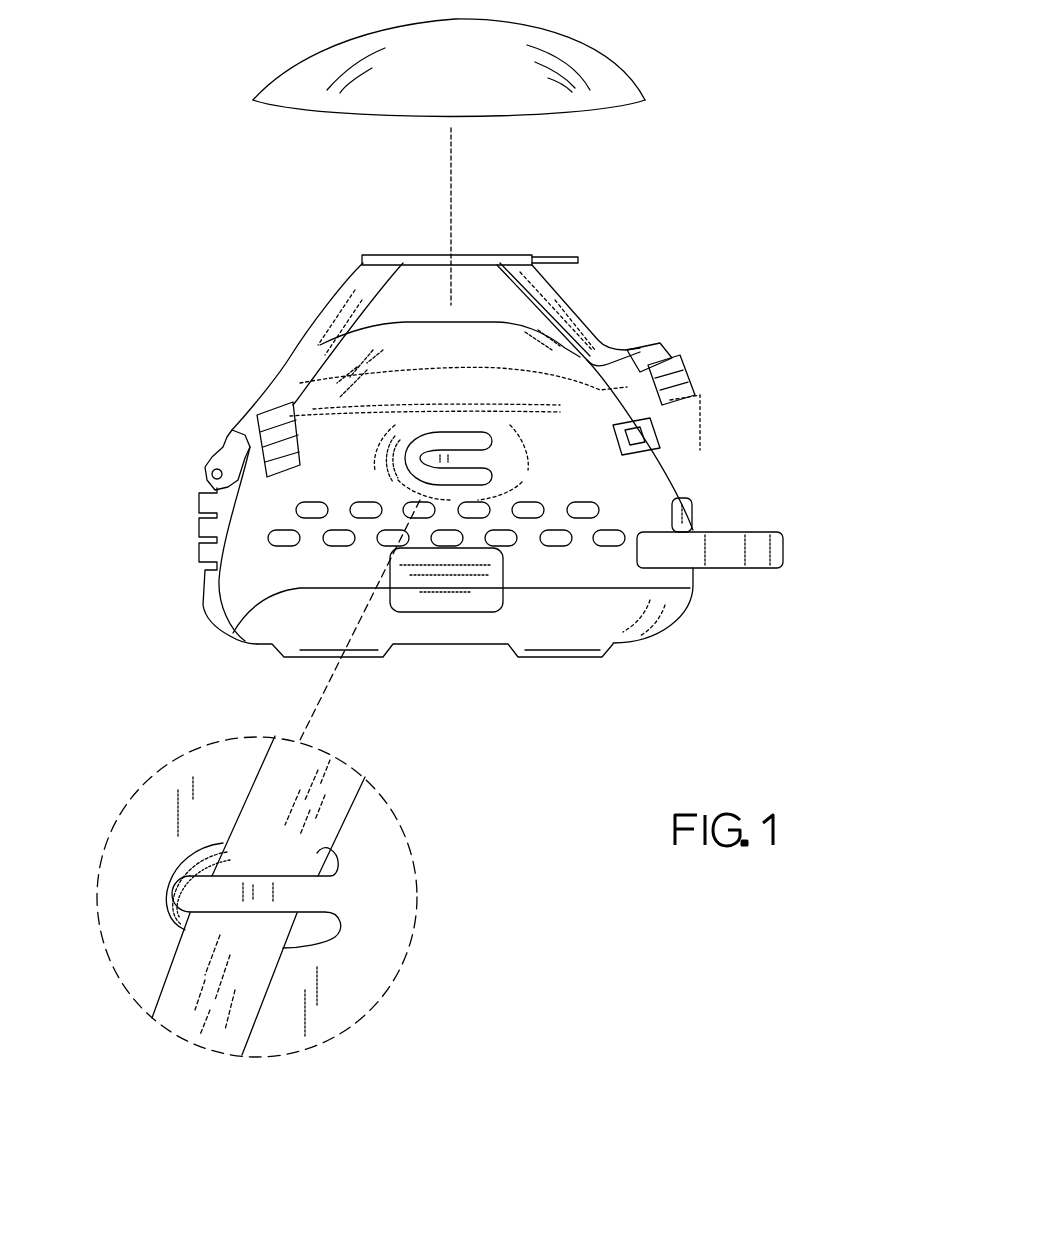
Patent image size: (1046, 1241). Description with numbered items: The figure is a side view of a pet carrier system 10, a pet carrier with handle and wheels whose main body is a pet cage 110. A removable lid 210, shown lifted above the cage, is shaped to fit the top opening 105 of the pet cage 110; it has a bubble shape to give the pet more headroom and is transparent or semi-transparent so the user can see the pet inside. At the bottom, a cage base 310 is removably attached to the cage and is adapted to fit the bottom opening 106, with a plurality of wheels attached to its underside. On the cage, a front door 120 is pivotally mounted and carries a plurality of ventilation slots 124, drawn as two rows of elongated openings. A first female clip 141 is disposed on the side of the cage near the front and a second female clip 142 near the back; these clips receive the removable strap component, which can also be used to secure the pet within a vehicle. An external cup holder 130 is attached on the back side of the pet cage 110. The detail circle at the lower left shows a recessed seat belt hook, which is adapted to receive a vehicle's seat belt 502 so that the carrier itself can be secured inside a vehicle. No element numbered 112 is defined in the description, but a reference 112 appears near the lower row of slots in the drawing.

The pet carrier system 10 is at (473, 591).
The top opening 105 is at (560, 407).
The bottom opening 106 is at (665, 592).
The pet cage 110 is at (658, 477).
The vent slots 112 is at (278, 543).
The front door 120 is at (235, 438).
The ventilation slots 124 is at (462, 487).
The external cup holder 130 is at (718, 547).
The first female clip 141 is at (247, 465).
The second female clip 142 is at (632, 450).
The removable lid 210 is at (598, 68).
The cage base 310 is at (658, 622).
The vehicle's seat belt 502 is at (182, 1002).